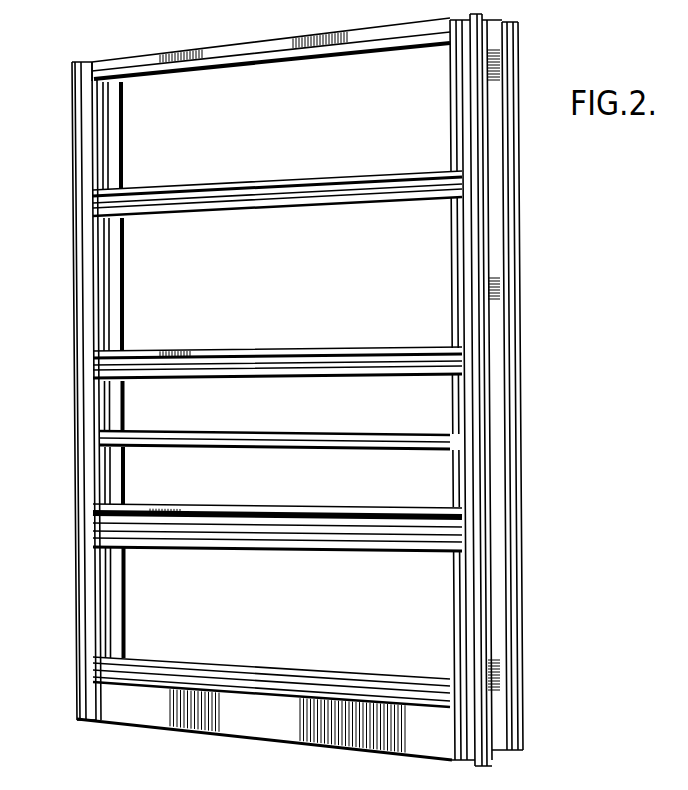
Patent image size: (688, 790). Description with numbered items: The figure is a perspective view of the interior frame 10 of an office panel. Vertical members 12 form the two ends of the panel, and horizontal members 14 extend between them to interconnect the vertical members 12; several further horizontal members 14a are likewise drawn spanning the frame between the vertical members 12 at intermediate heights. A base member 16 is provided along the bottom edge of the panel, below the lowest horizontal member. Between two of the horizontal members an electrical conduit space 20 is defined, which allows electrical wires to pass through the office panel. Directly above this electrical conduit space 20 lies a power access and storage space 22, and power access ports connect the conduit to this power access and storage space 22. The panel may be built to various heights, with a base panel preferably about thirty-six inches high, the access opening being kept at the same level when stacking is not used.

The interior frame 10 is at (541, 226).
The vertical member 12 is at (110, 278).
The horizontal member 14 is at (271, 48).
The shelf 14a is at (384, 174).
The base member 16 is at (257, 712).
The electrical conduit space 20 is at (425, 484).
The power access and storage space 22 is at (410, 421).